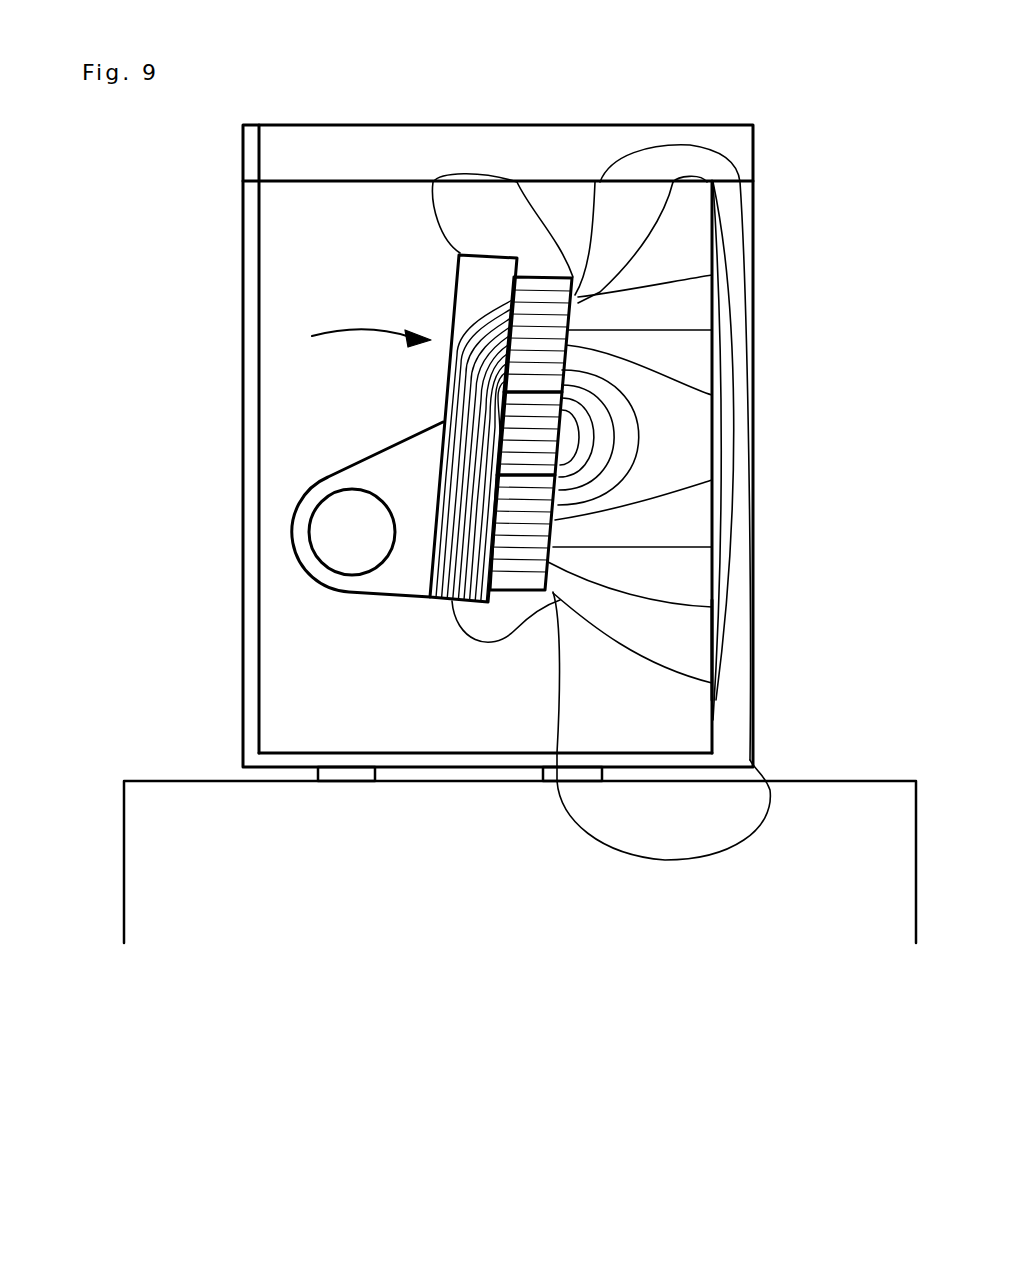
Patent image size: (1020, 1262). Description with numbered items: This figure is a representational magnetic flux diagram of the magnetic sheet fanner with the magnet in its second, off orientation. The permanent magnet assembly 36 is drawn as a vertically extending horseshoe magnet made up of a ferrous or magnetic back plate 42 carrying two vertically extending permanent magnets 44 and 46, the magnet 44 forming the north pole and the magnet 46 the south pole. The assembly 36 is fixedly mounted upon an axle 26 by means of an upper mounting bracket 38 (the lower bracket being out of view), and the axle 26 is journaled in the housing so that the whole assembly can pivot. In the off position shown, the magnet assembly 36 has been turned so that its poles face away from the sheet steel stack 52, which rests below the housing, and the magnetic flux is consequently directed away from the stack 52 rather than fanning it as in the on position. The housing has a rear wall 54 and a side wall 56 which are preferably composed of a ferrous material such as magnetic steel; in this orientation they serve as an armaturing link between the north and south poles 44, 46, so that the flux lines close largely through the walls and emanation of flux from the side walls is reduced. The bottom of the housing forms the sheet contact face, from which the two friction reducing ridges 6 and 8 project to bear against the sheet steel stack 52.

The rear wall 54 is at (360, 150).
The permanent magnet 46 is at (535, 300).
The back plate 42 is at (475, 282).
The permanent magnet assembly 36 is at (360, 345).
The upper mounting bracket 38 is at (398, 473).
The axle 26 is at (343, 542).
The permanent magnet 44 is at (532, 570).
The side wall 56 is at (736, 657).
The sheet steel stack 52 is at (262, 820).
The friction reducing ridge 6 is at (343, 773).
The friction reducing ridge 8 is at (585, 777).